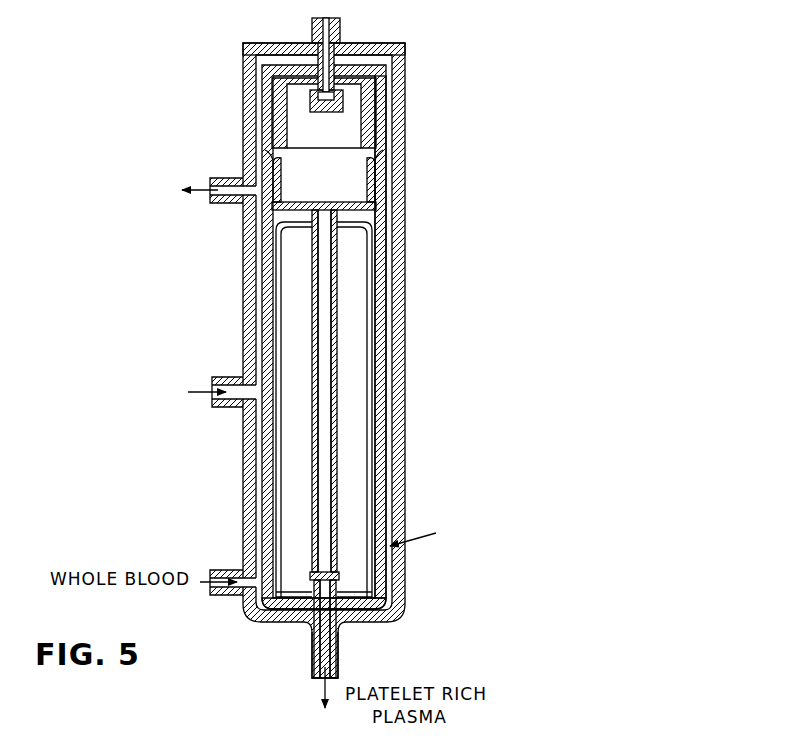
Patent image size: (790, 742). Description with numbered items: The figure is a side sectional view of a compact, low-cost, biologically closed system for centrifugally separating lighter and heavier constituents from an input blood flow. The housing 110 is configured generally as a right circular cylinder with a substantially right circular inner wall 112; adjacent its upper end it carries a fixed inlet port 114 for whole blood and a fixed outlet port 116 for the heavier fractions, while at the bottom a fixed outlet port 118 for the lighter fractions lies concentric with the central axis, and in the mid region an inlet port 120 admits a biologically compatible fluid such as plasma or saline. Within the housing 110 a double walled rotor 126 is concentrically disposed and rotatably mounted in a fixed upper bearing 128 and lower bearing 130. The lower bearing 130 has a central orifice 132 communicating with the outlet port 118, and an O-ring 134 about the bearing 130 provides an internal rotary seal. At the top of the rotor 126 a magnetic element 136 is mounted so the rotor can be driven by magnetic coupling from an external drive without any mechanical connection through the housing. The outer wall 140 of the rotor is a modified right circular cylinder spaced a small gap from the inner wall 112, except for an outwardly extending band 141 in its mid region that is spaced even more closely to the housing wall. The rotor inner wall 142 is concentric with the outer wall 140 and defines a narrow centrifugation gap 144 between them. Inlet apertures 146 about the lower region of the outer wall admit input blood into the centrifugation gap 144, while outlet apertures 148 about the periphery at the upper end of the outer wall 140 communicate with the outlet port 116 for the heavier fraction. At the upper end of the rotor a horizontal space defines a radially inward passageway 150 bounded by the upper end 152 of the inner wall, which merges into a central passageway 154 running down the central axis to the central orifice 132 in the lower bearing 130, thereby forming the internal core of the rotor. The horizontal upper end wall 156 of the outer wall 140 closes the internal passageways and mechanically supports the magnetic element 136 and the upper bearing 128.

The housing 110 is at (327, 363).
The inner wall 112 is at (356, 349).
The inlet port 114 is at (222, 599).
The outlet port 116 is at (222, 206).
The outlet port 118 is at (342, 668).
The inlet port 120 is at (224, 410).
The double walled rotor 126 is at (434, 532).
The upper bearing 128 is at (336, 55).
The lower bearing 130 is at (348, 622).
The central orifice 132 is at (320, 636).
The O-ring 134 is at (282, 621).
The magnetic element 136 is at (367, 87).
The outer wall 140 is at (365, 358).
The outwardly extending band 141 is at (388, 368).
The rotor inner wall 142 is at (383, 307).
The centrifugation gap 144 is at (377, 407).
The inlet apertures 146 is at (266, 586).
The outlet apertures 148 is at (256, 178).
The radially inward passageway 150 is at (244, 243).
The upper end of the inner wall 152 is at (278, 262).
The central passageway 154 is at (259, 433).
The horizontal upper end wall 156 is at (390, 46).